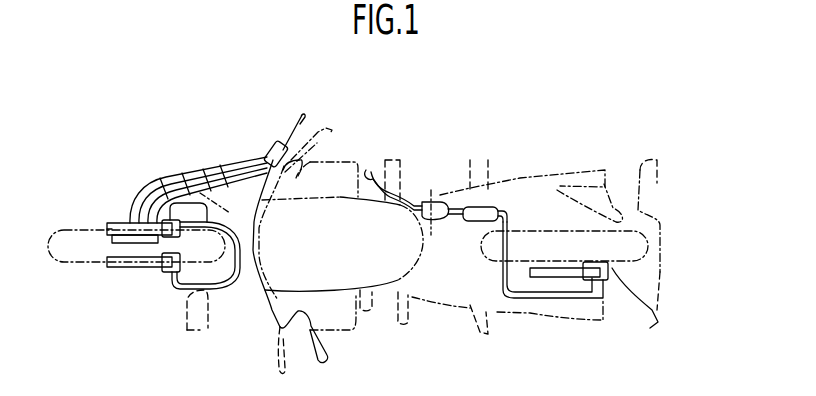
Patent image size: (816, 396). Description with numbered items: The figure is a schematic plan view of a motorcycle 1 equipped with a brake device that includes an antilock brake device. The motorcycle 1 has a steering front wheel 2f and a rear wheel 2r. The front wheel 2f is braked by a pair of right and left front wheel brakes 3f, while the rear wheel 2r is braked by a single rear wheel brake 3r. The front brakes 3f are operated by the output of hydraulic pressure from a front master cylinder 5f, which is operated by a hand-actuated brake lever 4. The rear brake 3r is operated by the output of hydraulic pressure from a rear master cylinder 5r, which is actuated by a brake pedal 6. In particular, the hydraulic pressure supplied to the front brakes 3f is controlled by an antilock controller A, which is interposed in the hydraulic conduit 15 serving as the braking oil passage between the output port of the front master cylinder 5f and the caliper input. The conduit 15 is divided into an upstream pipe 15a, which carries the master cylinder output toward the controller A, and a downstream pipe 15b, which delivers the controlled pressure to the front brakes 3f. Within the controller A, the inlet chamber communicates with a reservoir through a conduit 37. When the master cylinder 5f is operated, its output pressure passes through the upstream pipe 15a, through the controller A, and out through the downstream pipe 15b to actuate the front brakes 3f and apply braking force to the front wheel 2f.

The motorcycle 1 is at (449, 170).
The front wheel 2f is at (63, 262).
The rear wheel 2r is at (650, 245).
The front wheel brakes 3f is at (127, 217).
The rear wheel brake 3r is at (613, 283).
The brake lever 4 is at (296, 119).
The front master cylinder 5f is at (268, 153).
The rear master cylinder 5r is at (489, 209).
The brake pedal 6 is at (370, 168).
The hydraulic conduit 15 is at (218, 171).
The upstream pipe 15a is at (172, 180).
The downstream pipe 15b is at (242, 243).
The conduit 37 is at (177, 171).
The antilock controller A is at (107, 228).